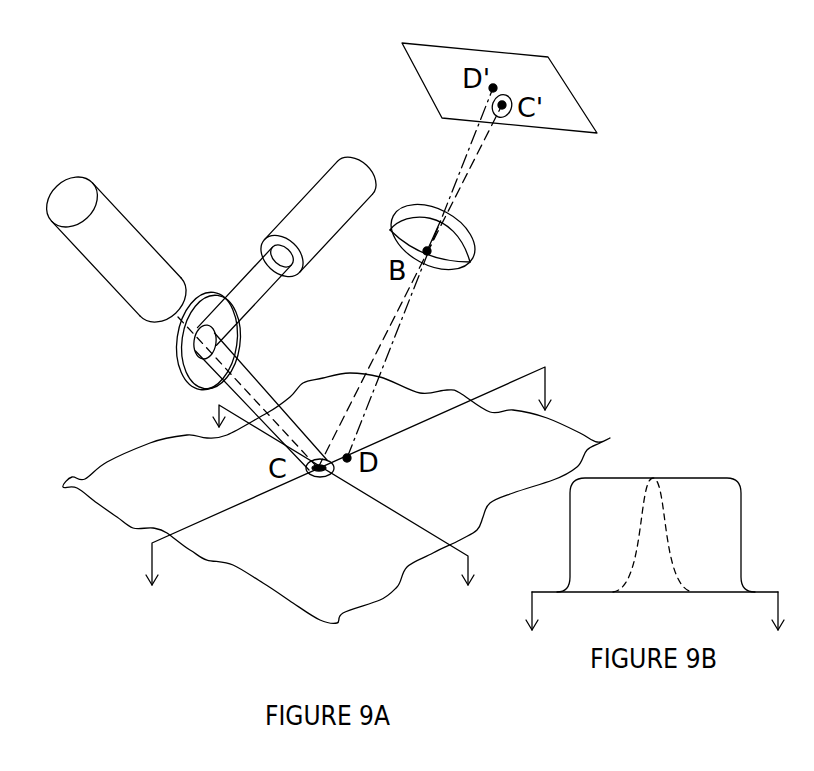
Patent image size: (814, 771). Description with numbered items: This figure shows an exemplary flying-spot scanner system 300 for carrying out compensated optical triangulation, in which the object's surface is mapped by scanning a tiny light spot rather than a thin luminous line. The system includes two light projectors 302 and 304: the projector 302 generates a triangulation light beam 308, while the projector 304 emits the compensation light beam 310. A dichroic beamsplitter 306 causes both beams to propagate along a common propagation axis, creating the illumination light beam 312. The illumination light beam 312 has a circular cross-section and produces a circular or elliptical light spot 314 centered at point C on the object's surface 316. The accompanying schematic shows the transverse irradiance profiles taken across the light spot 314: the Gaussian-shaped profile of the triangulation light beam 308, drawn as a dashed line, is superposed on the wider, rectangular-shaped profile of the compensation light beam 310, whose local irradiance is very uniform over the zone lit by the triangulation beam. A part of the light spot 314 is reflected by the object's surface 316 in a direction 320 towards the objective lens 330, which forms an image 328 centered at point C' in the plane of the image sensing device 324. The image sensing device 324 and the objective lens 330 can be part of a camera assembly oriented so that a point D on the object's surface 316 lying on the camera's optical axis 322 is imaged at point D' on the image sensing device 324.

The flying-spot scanner system 300 is at (628, 244).
The light projector 302 is at (80, 192).
The light projector 304 is at (315, 202).
The dichroic beamsplitter 306 is at (178, 368).
The triangulation light beam 308 is at (176, 310).
The compensation light beam 310 is at (262, 281).
The illumination light beam 312 is at (245, 362).
The light spot 314 is at (316, 476).
The object's surface 316 is at (347, 570).
The direction 320 is at (376, 359).
The camera's optical axis 322 is at (399, 313).
The image sensing device 324 is at (547, 78).
The image 328 is at (503, 117).
The objective lens 330 is at (458, 228).